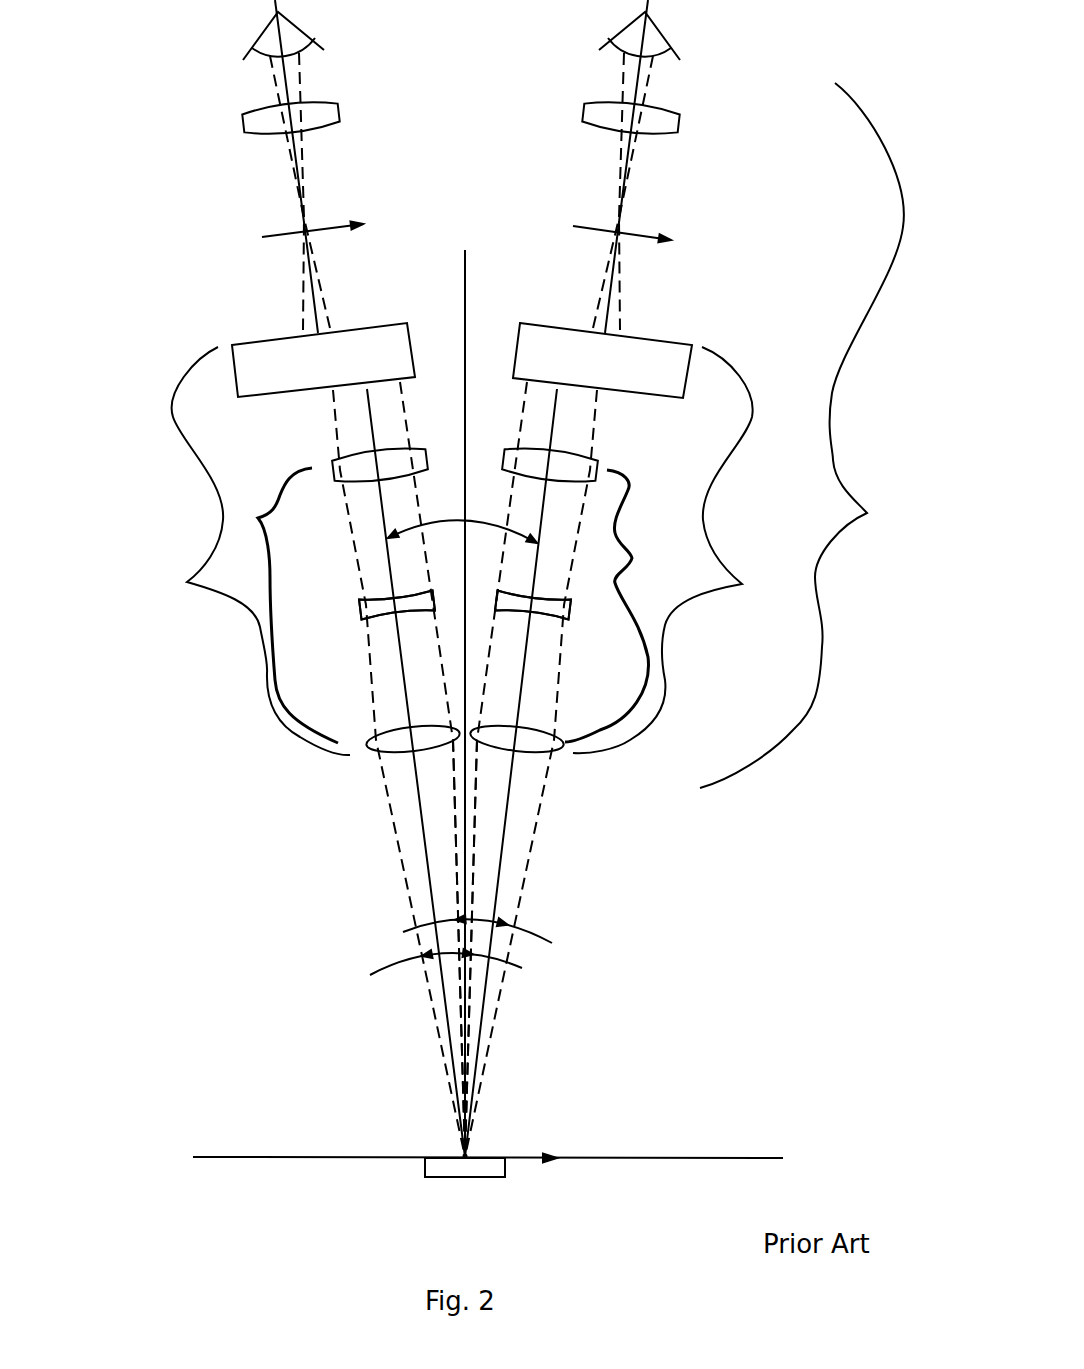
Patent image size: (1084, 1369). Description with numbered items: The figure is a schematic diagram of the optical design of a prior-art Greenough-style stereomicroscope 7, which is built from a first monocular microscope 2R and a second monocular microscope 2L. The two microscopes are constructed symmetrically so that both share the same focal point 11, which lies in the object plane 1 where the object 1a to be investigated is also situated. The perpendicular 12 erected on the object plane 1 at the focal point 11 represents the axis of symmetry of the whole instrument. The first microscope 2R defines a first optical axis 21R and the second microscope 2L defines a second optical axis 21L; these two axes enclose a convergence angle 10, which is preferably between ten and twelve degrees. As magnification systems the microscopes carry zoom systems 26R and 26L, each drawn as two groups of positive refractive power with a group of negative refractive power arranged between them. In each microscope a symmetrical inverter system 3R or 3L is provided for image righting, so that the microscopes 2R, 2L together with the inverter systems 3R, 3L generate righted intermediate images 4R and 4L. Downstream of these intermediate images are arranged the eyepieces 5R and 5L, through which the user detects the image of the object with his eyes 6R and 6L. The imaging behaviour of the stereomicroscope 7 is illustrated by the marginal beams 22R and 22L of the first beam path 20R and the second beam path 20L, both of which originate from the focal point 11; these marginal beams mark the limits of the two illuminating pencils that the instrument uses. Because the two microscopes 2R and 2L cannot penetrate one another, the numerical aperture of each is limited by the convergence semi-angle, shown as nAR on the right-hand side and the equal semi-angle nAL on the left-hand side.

The object plane 1 is at (632, 1157).
The object 1a is at (445, 1167).
The second monocular microscope 2L is at (243, 551).
The first monocular microscope 2R is at (677, 550).
The symmetrical inverter system 3L is at (258, 340).
The symmetrical inverter system 3R is at (667, 345).
The righted intermediate image 4L is at (270, 235).
The righted intermediate image 4R is at (635, 232).
The eyepiece 5L is at (255, 112).
The eyepiece 5R is at (668, 113).
The eye 6L is at (257, 40).
The eye 6R is at (665, 40).
The Greenough-style stereomicroscope 7 is at (802, 435).
The convergence angle 10 is at (440, 516).
The focal point 11 is at (463, 1155).
The perpendicular 12 is at (465, 270).
The second beam path 20L is at (403, 803).
The first beam path 20R is at (527, 798).
The second optical axis 21L is at (403, 670).
The first optical axis 21R is at (527, 662).
The marginal beam 22L is at (457, 853).
The marginal beam 22R is at (473, 838).
The zoom system 26L is at (326, 593).
The zoom system 26R is at (590, 593).
The convergence semi-angle nAL is at (406, 970).
The convergence semi-angle nAR is at (508, 944).